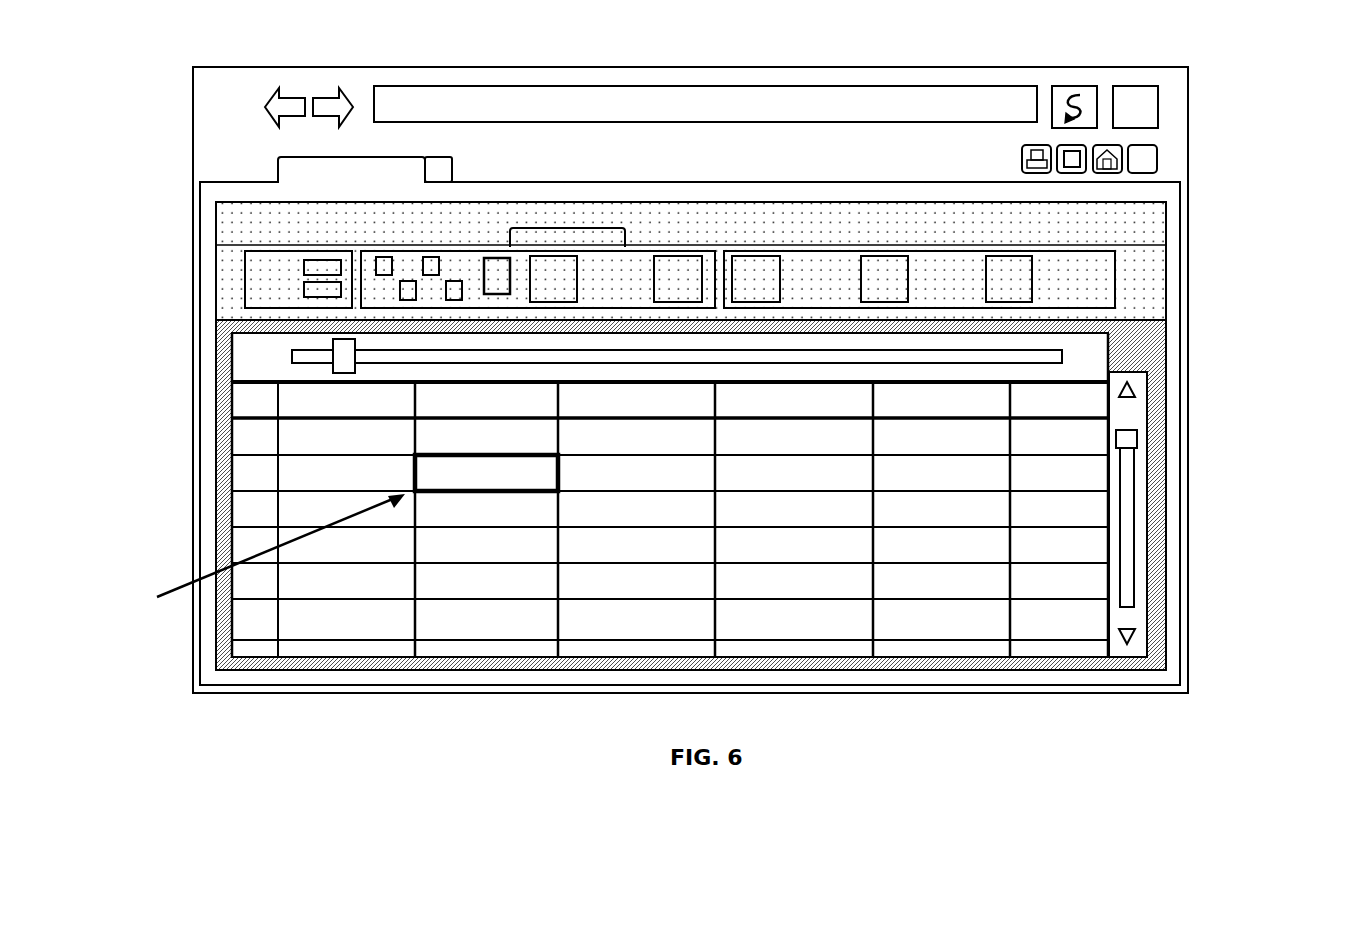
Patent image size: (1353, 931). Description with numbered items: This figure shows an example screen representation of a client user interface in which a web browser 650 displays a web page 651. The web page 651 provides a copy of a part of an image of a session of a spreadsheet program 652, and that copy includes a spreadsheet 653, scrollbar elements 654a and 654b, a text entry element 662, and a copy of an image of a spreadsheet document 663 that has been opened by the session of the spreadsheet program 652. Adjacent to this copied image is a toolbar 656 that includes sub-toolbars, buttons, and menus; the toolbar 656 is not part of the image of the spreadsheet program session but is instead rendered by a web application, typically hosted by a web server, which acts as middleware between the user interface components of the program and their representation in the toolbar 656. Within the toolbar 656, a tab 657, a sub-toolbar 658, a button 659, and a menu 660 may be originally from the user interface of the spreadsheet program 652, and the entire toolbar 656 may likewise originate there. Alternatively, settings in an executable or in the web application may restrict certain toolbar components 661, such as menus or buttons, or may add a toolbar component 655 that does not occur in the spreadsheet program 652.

The web browser 650 is at (193, 98).
The web page 651 is at (200, 185).
The spreadsheet program 652 is at (232, 380).
The spreadsheet 653 is at (232, 450).
The scrollbar element 654a is at (232, 335).
The scrollbar element 654b is at (1147, 390).
The toolbar component that does not occur in the spreadsheet program 655 is at (443, 212).
The toolbar 656 is at (216, 233).
The tab 657 is at (602, 226).
The sub-toolbar 658 is at (1115, 291).
The button 659 is at (490, 257).
The menu 660 is at (1158, 250).
The toolbar components 661 is at (945, 260).
The text entry element 662 is at (257, 551).
The spreadsheet document 663 is at (280, 500).